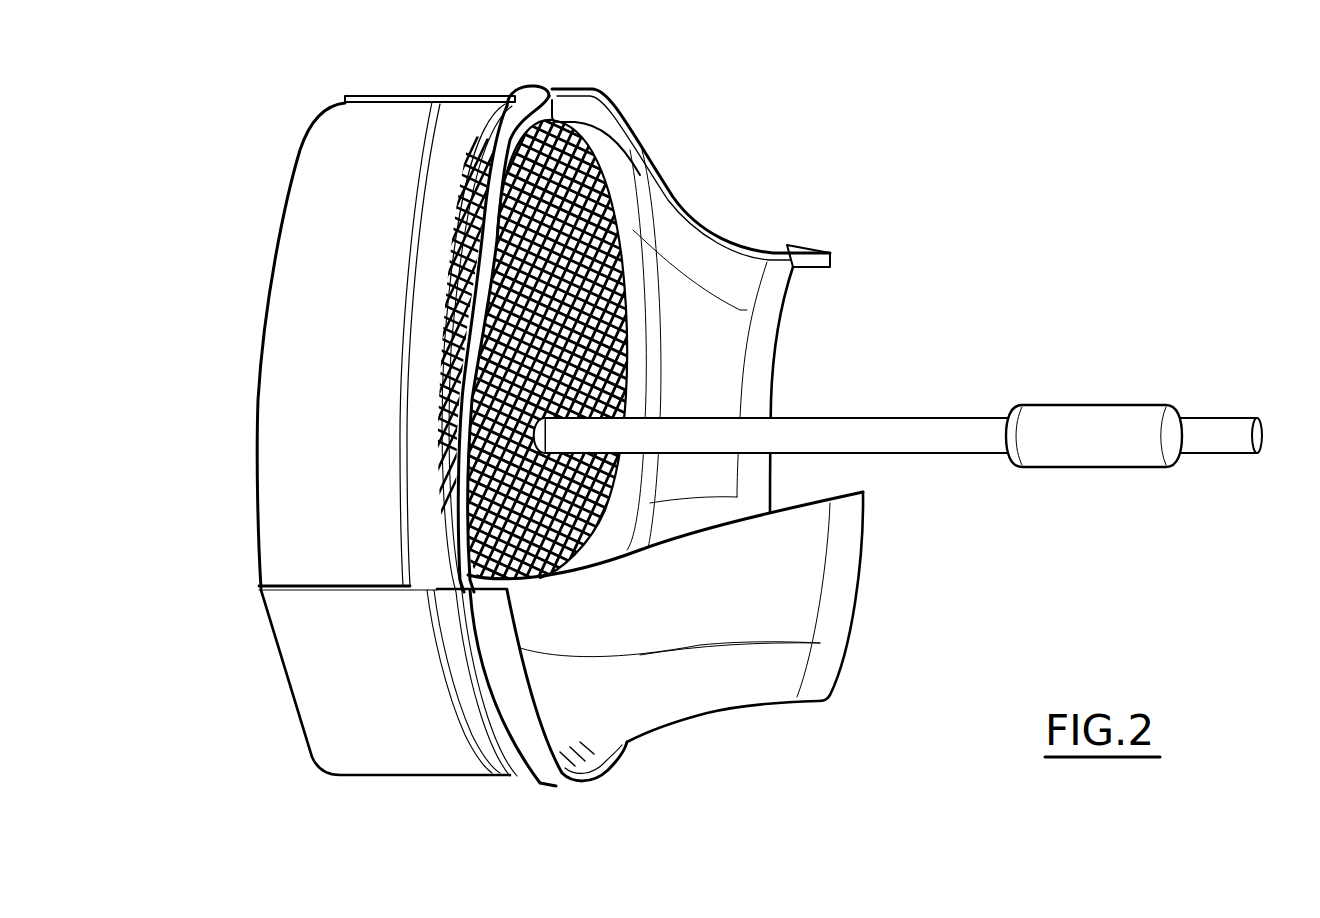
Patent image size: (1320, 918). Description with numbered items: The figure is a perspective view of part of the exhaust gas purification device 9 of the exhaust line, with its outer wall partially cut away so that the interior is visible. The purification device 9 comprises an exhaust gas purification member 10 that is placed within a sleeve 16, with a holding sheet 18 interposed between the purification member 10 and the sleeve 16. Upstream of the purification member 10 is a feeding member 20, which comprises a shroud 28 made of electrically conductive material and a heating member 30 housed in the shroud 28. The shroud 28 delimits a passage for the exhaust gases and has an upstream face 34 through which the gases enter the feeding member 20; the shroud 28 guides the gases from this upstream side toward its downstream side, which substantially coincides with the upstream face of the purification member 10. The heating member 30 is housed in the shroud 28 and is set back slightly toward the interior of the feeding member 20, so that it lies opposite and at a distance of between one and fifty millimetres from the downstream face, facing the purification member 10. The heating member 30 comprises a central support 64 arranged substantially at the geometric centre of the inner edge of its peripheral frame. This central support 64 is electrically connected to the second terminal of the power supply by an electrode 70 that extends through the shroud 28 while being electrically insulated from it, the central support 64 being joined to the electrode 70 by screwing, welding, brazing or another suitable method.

The exhaust gas purification device 9 is at (937, 298).
The exhaust gas purification member 10 is at (437, 344).
The sleeve 16 is at (385, 733).
The holding sheet 18 is at (290, 522).
The feeding member 20 is at (725, 747).
The shroud 28 is at (767, 587).
The heating member 30 is at (607, 243).
The upstream face 34 is at (780, 363).
The central support 64 is at (463, 448).
The electrode 70 is at (1088, 437).